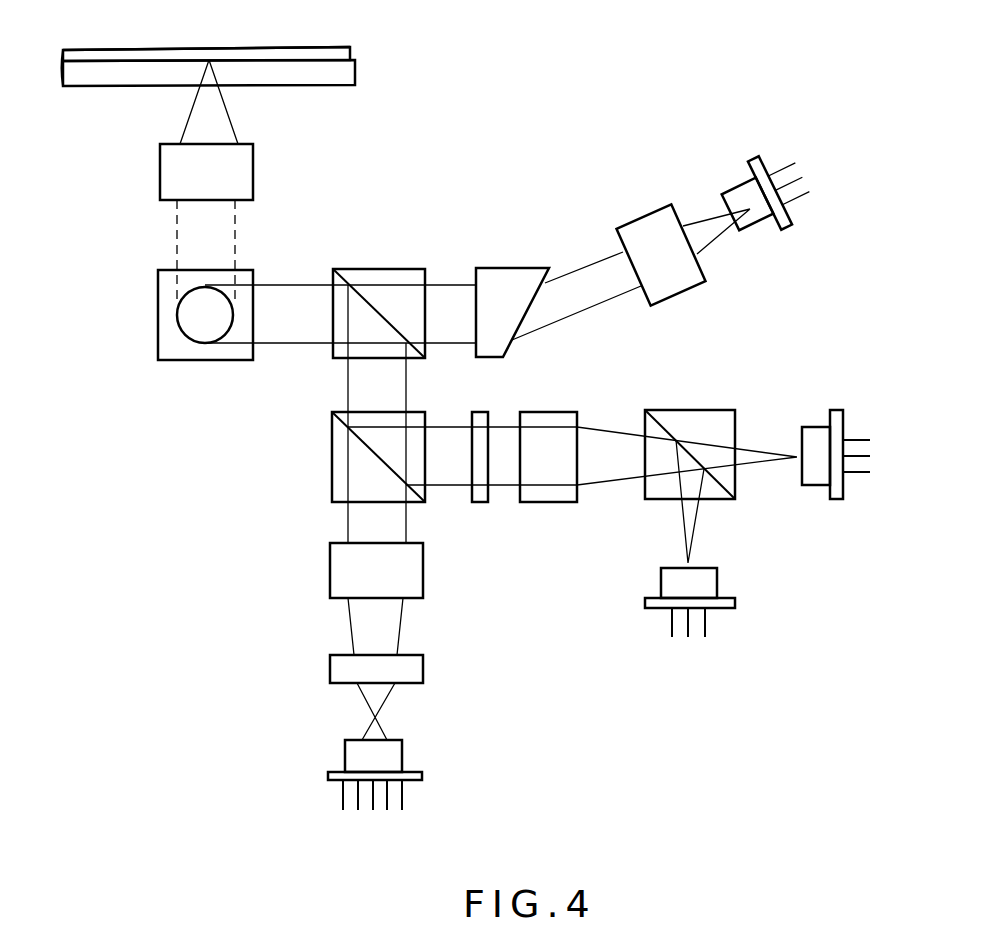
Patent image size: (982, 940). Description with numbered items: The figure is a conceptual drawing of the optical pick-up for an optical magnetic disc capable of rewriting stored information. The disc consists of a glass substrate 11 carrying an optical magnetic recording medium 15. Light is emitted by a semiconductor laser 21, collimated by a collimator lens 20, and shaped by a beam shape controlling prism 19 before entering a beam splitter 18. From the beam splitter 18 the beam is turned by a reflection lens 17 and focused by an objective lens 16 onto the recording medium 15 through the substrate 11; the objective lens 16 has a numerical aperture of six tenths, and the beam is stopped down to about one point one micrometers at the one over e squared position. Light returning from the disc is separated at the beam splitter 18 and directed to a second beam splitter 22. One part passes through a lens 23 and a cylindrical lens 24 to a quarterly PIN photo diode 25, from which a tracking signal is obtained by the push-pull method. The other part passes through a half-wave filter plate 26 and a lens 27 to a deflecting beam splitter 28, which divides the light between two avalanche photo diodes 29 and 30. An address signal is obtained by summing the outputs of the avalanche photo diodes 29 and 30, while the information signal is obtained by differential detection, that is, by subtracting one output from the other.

The glass substrate 11 is at (340, 75).
The optical magnetic recording medium 15 is at (347, 51).
The objective lens 16 is at (168, 179).
The reflection lens 17 is at (165, 307).
The beam splitter 18 is at (390, 275).
The beam shape controlling prism 19 is at (507, 277).
The collimator lens 20 is at (638, 228).
The semiconductor laser 21 is at (748, 182).
The beam splitter 22 is at (338, 478).
The lens 23 is at (337, 572).
The cylindrical lens 24 is at (337, 670).
The quarterly PIN photo diode 25 is at (343, 757).
The λ/2 filter plate 26 is at (483, 410).
The lens 27 is at (560, 410).
The deflecting beam splitter 28 is at (710, 407).
The avalanche photo diode 29 is at (834, 406).
The avalanche photo diode 30 is at (735, 602).